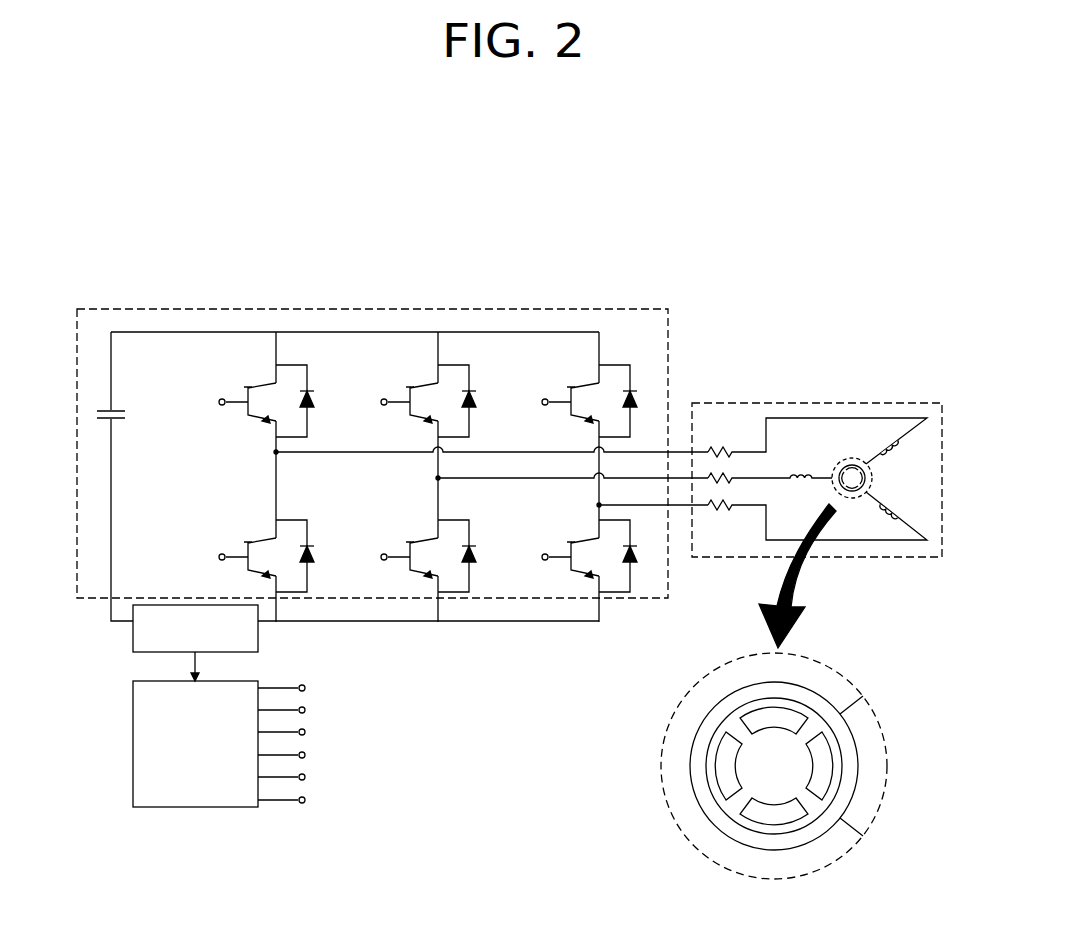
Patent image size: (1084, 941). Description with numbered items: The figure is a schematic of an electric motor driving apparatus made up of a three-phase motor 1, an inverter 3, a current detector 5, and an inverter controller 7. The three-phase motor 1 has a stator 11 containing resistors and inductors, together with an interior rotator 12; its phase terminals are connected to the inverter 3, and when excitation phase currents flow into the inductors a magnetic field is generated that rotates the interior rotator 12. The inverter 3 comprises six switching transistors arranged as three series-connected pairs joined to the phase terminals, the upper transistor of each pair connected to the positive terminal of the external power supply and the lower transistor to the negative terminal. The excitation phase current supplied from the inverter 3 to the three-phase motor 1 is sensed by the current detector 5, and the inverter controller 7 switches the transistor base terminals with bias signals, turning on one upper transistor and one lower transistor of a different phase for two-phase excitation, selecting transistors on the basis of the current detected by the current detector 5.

The three-phase motor 1 is at (816, 403).
The inverter 3 is at (373, 308).
The current detector 5 is at (133, 633).
The inverter controller 7 is at (133, 746).
The stator 11 is at (690, 752).
The interior rotator 12 is at (706, 783).